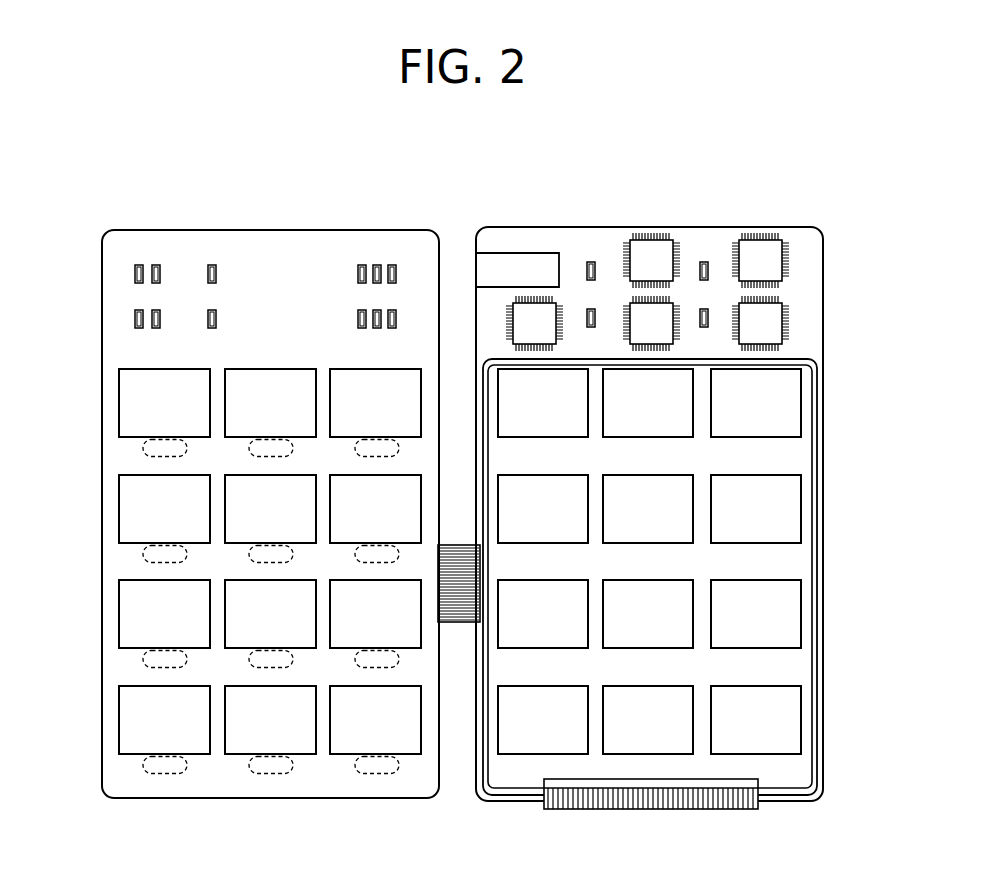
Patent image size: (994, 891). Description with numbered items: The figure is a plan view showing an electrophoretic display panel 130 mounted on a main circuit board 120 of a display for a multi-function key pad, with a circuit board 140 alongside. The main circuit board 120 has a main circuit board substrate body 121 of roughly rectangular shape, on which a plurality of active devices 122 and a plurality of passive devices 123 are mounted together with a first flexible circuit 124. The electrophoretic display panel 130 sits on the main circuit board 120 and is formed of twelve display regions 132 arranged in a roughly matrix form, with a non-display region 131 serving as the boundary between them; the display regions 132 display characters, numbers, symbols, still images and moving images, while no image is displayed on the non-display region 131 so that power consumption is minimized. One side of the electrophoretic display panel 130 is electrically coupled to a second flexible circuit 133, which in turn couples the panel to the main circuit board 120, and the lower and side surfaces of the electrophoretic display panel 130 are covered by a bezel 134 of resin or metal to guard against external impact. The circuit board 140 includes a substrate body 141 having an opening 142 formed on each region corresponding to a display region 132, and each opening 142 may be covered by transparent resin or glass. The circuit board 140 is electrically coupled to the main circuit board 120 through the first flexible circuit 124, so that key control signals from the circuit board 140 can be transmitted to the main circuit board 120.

The main circuit board 120 is at (787, 223).
The main circuit board substrate body 121 is at (716, 245).
The active devices 122 is at (647, 248).
The passive devices 123 is at (586, 268).
The first flexible circuit 124 is at (457, 612).
The electrophoretic display panel 130 is at (693, 577).
The non-display region 131 is at (698, 576).
The display regions 132 is at (788, 517).
The second flexible circuit 133 is at (622, 800).
The bezel 134 is at (818, 609).
The circuit board 140 is at (339, 225).
The substrate body 141 is at (270, 245).
The opening 142 is at (130, 402).